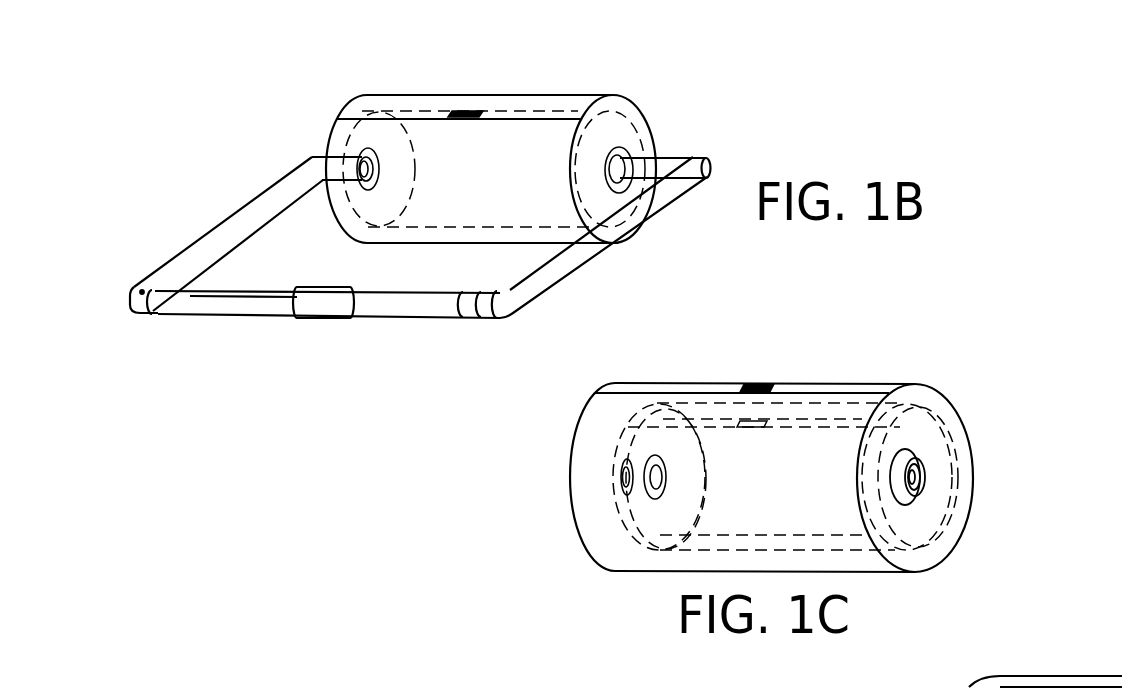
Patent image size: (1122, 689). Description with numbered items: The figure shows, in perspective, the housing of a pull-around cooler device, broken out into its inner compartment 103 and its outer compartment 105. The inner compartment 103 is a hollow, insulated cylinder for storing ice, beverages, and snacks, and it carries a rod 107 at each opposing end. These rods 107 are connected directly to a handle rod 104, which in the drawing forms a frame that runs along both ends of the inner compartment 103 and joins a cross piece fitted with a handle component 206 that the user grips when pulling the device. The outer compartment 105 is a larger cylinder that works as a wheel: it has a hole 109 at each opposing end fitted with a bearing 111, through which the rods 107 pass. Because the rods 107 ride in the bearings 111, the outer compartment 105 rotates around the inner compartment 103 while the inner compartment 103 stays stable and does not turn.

In FIG. 1B, the inner compartment 103 is at (548, 102).
In FIG. 1C, the inner compartment 103 is at (917, 418).
In FIG. 1B, the handle rod 104 is at (636, 214).
In FIG. 1C, the outer compartment 105 is at (795, 388).
In FIG. 1B, the rod 107 is at (662, 157).
In FIG. 1C, the hole 109 is at (915, 497).
In FIG. 1C, the bearing 111 is at (918, 463).
In FIG. 1B, the handle component 206 is at (325, 303).